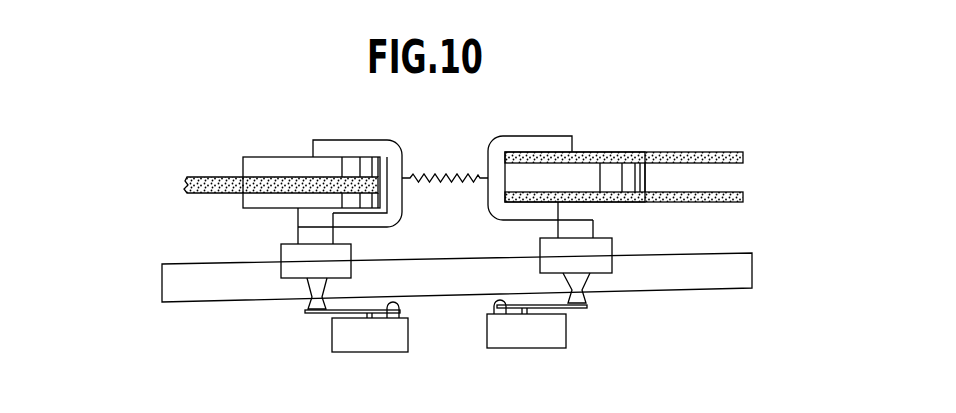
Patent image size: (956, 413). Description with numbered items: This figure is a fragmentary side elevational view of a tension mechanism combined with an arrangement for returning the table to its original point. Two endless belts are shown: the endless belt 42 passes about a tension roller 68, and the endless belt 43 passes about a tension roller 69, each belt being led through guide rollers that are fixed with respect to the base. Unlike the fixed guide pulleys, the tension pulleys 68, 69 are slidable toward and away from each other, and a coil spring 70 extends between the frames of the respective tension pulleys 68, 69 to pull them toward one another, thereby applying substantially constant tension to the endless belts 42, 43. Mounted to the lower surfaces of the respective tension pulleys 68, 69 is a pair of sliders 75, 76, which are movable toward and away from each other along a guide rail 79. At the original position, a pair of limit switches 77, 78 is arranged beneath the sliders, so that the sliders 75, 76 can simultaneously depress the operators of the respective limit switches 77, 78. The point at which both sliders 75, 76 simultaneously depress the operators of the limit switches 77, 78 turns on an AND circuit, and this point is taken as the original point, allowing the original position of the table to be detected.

The endless belt 42 is at (211, 177).
The endless belt 43 is at (705, 153).
The tension roller 68 is at (284, 162).
The tension roller 69 is at (610, 178).
The coil spring 70 is at (426, 170).
The slider 75 is at (297, 270).
The slider 76 is at (597, 263).
The limit switch 77 is at (369, 338).
The limit switch 78 is at (535, 335).
The guide rail 79 is at (707, 275).